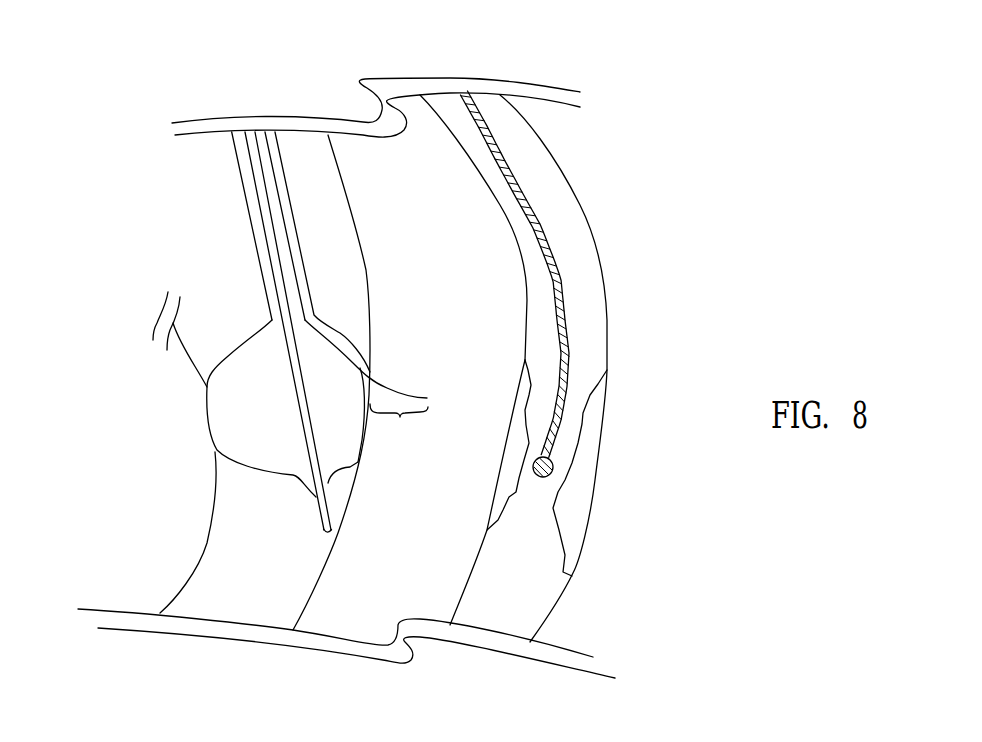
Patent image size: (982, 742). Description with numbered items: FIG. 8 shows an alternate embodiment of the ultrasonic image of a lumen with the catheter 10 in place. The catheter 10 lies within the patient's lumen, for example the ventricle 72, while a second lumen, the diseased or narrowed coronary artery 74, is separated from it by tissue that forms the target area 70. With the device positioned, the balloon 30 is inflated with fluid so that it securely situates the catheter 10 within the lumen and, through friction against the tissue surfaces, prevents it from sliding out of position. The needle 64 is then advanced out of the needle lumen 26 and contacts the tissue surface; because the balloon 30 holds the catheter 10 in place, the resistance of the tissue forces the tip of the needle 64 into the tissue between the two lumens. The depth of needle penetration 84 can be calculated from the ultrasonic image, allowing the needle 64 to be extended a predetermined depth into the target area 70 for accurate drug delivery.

The catheter 10 is at (182, 223).
The needle lumen 26 is at (335, 332).
The balloon 30 is at (247, 477).
The needle 64 is at (387, 388).
The target area 70 is at (463, 481).
The ventricle 72 is at (268, 595).
The coronary artery 74 is at (510, 587).
The depth of needle penetration 84 is at (399, 430).